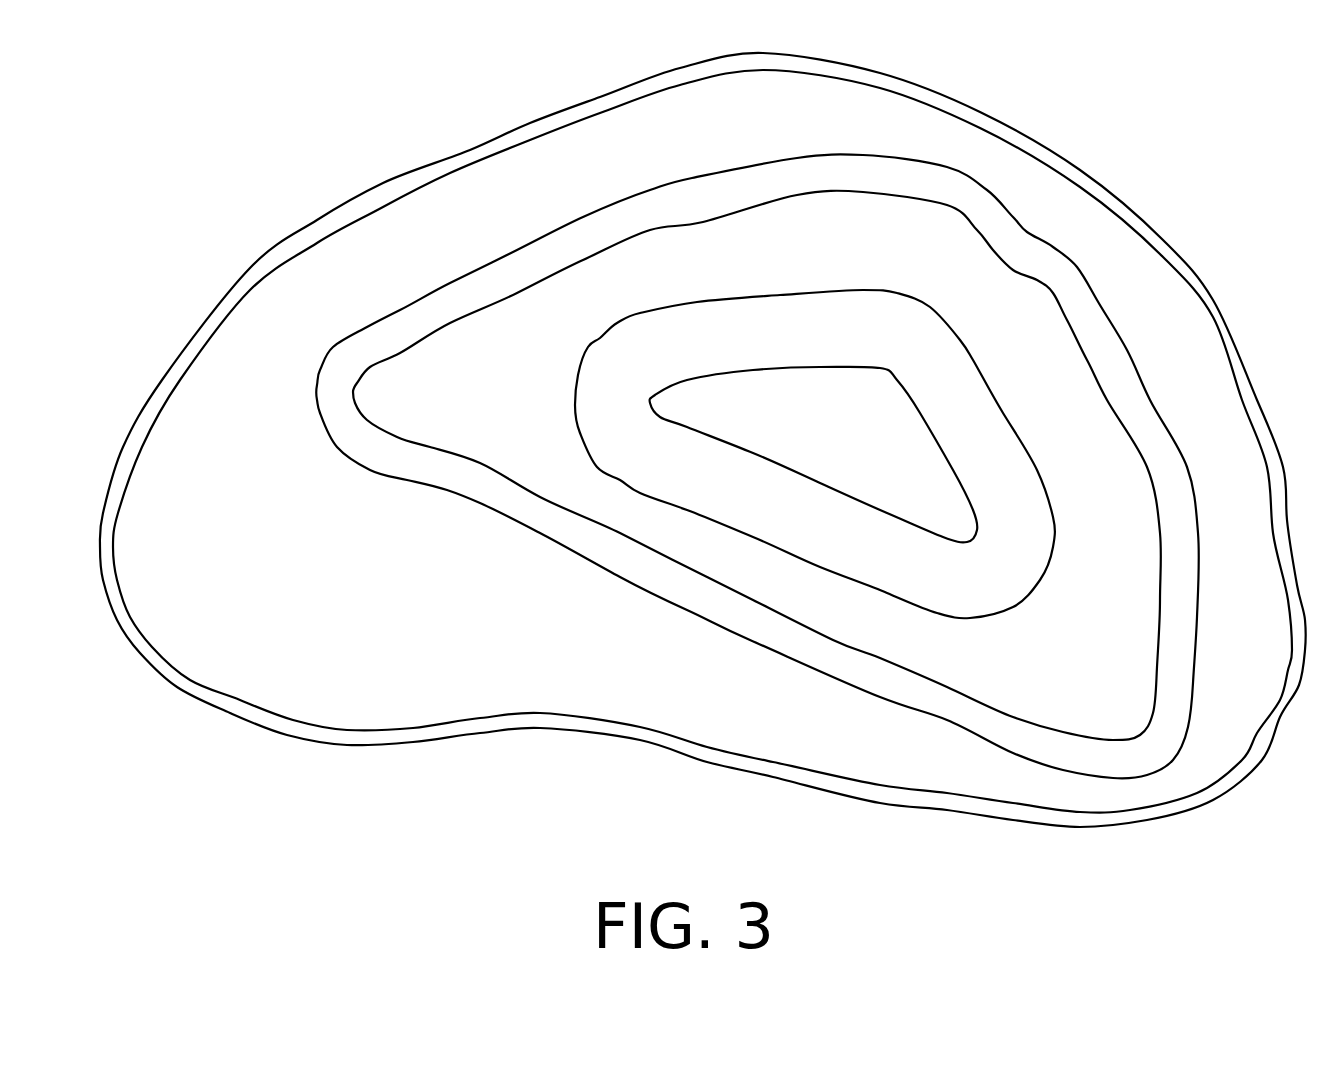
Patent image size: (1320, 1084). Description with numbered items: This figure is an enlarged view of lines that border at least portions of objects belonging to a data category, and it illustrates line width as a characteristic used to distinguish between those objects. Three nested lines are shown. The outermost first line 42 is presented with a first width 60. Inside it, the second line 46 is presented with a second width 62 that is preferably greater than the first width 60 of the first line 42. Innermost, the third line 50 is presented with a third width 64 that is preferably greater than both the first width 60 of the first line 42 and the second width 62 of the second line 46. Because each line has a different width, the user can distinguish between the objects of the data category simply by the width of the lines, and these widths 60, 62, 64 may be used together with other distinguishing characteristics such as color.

The first line 42 is at (645, 733).
The first width 60 is at (784, 717).
The second line 46 is at (567, 530).
The second width 62 is at (715, 265).
The third line 50 is at (623, 368).
The third width 64 is at (783, 295).